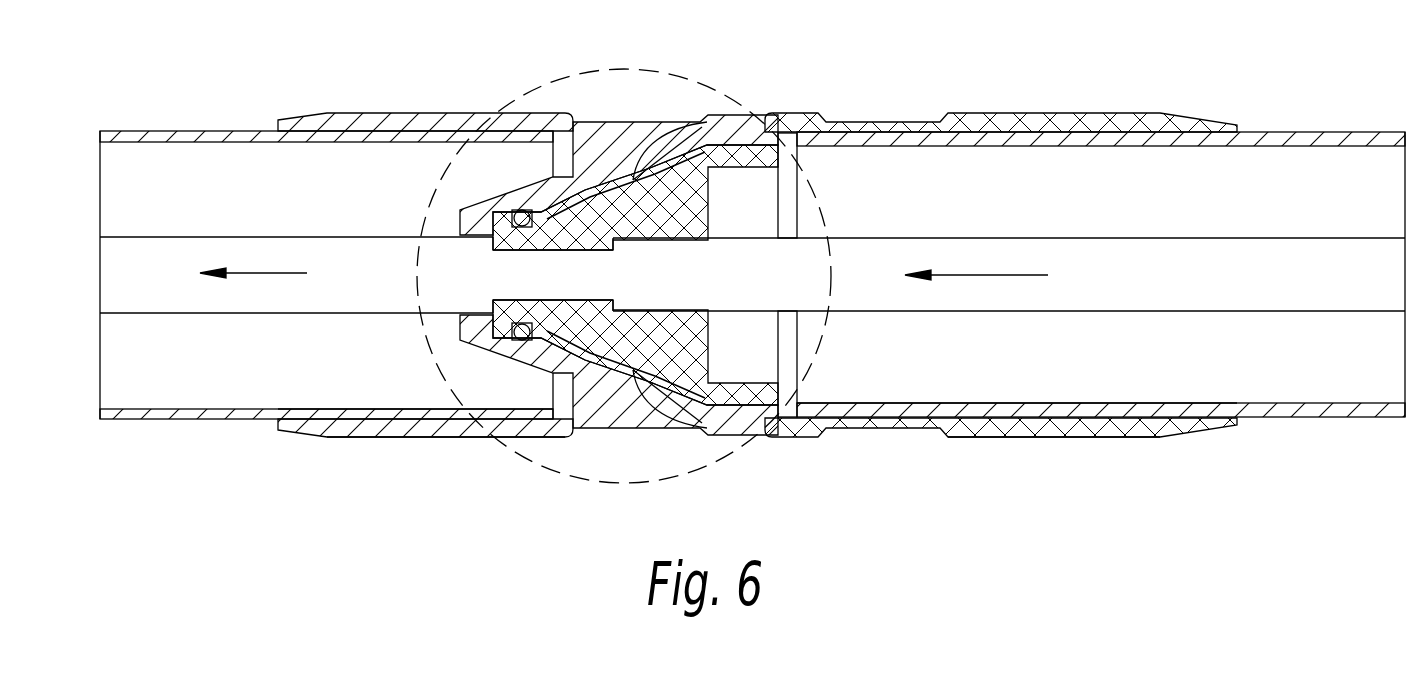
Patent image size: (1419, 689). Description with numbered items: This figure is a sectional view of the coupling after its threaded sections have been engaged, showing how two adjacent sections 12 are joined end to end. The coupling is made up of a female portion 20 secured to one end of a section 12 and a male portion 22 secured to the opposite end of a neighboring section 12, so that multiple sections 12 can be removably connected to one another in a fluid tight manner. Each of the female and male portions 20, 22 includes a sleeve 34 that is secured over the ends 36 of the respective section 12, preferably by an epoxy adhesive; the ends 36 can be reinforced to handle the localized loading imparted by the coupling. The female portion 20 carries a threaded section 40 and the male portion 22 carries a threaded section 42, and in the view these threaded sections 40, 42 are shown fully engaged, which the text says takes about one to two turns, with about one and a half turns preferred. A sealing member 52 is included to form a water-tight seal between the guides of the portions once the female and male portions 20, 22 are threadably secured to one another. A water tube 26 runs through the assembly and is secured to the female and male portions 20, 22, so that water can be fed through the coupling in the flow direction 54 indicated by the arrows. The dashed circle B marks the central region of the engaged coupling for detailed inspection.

The section 12 is at (227, 420).
The female portion 20 is at (402, 113).
The male portion 22 is at (1089, 114).
The water tube 26 is at (233, 313).
The sleeve 34 is at (383, 437).
The end 36 is at (338, 409).
The threaded section 40 is at (677, 121).
The threaded section 42 is at (627, 275).
The sealing member 52 is at (508, 341).
The flow direction 54 is at (253, 273).
The detail circle B is at (535, 462).